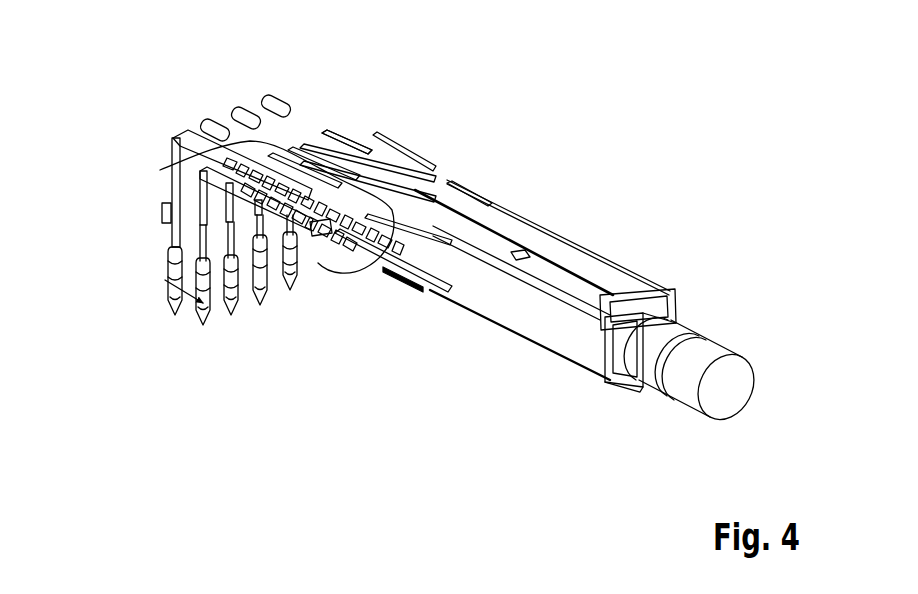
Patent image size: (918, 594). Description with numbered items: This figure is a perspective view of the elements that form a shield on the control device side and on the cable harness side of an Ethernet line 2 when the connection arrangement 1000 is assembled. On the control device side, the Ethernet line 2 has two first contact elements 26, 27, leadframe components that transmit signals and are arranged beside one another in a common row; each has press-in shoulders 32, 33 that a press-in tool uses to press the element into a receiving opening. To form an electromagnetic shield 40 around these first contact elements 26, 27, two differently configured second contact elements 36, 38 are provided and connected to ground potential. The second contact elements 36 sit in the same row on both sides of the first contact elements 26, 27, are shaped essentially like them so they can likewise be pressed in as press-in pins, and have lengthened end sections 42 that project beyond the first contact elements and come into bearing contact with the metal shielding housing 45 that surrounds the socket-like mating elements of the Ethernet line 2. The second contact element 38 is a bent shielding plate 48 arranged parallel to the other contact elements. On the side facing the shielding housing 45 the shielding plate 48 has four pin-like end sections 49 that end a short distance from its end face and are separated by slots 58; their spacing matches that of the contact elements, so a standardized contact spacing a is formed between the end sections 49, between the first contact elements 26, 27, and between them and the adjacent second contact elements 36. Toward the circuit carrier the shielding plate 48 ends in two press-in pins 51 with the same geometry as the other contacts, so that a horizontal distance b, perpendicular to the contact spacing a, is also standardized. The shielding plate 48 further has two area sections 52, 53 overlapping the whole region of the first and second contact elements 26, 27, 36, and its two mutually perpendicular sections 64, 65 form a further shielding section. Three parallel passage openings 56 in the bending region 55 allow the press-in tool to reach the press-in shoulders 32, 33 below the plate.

The connection arrangement 1000 is at (498, 66).
The Ethernet line 2 is at (482, 155).
The electromagnetic shield 40 is at (420, 128).
The shielding housing 45 is at (520, 322).
The end sections 42 is at (412, 296).
The bending region 55 is at (165, 125).
The section 65 is at (172, 203).
The area section 53 is at (173, 192).
The slots 58 is at (160, 170).
The passage openings 56 is at (228, 110).
The section 64 is at (270, 130).
The area section 52 is at (302, 128).
The second contact element 38 is at (320, 130).
The shielding plate 48 is at (347, 142).
The press-in shoulder 32 is at (205, 240).
The press-in shoulder 33 is at (198, 258).
The press-in pins 51 is at (178, 283).
The second contact element 36 is at (202, 302).
The first contact element 26 is at (257, 290).
The first contact element 27 is at (268, 285).
The pin-like end sections 49 is at (392, 203).
The contact spacing a is at (372, 152).
The horizontal distance b is at (193, 300).